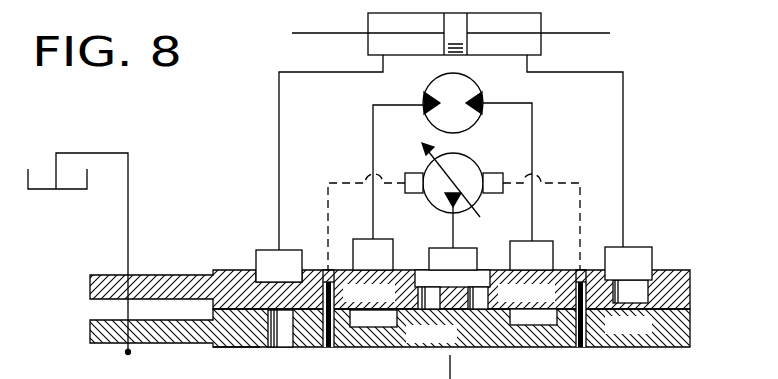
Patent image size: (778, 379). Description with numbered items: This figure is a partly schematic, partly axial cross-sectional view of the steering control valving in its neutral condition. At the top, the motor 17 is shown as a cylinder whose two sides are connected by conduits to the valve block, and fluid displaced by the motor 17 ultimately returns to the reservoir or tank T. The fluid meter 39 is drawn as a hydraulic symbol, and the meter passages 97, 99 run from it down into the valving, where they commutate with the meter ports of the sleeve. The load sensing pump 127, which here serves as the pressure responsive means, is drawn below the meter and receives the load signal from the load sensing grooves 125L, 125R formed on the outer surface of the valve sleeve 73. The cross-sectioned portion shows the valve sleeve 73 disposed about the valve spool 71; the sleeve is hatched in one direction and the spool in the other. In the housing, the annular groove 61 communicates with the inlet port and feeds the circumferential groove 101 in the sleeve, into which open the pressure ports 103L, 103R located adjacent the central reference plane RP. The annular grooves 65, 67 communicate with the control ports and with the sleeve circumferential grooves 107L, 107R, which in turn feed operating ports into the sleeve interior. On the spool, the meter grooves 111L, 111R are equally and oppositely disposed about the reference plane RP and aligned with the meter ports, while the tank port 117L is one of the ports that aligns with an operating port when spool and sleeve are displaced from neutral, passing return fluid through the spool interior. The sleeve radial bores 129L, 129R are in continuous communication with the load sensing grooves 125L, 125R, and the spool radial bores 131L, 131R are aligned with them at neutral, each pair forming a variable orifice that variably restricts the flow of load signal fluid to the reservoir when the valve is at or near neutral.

The motor 17 is at (421, 58).
The fluid meter 39 is at (484, 86).
The meter passage 97 is at (372, 131).
The meter passage 99 is at (533, 134).
The load sensing pump 127 is at (464, 157).
The load sensing groove 125L is at (325, 268).
The load sensing groove 125R is at (585, 268).
The annular groove 65 is at (270, 262).
The annular groove 67 is at (637, 260).
The circumferential groove 107L is at (262, 278).
The circumferential groove 107R is at (640, 276).
The annular groove 61 is at (441, 258).
The circumferential groove 101 is at (487, 278).
The radial bore 129L is at (342, 292).
The radial bore 129R is at (565, 296).
The valve sleeve 73 is at (677, 289).
The valve spool 71 is at (677, 326).
The radial bore 131L is at (279, 331).
The radial bore 131R is at (583, 326).
The tank port 117L is at (257, 346).
The meter groove 111L is at (373, 318).
The meter groove 111R is at (581, 336).
The pressure port 103L is at (435, 302).
The pressure port 103R is at (487, 300).
The tank T is at (68, 190).
The central reference plane RP is at (429, 367).